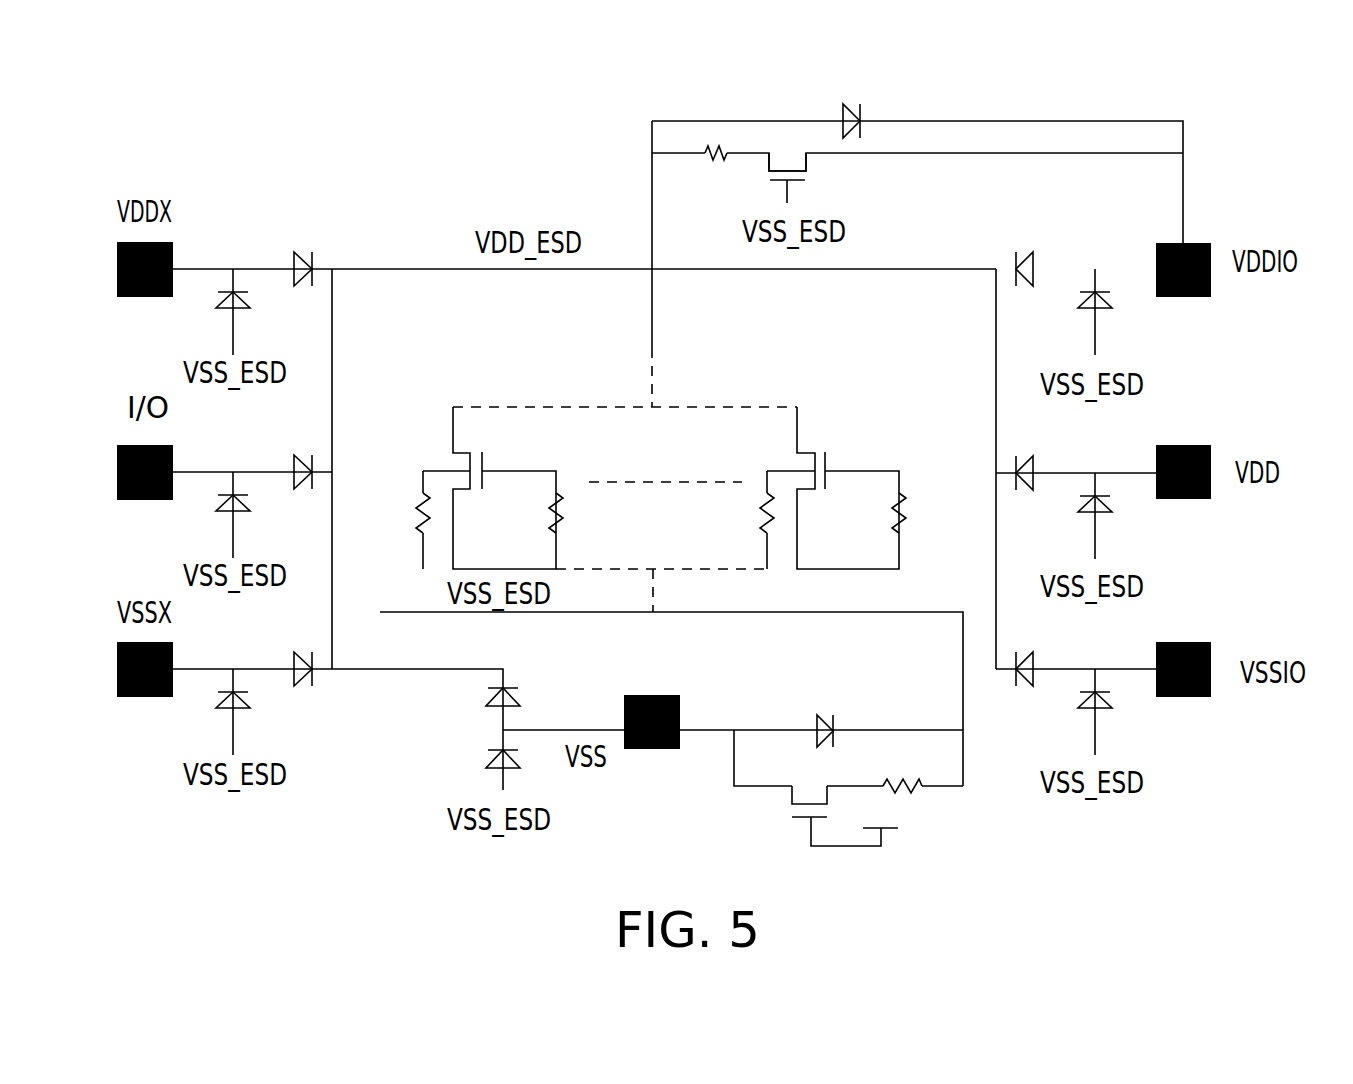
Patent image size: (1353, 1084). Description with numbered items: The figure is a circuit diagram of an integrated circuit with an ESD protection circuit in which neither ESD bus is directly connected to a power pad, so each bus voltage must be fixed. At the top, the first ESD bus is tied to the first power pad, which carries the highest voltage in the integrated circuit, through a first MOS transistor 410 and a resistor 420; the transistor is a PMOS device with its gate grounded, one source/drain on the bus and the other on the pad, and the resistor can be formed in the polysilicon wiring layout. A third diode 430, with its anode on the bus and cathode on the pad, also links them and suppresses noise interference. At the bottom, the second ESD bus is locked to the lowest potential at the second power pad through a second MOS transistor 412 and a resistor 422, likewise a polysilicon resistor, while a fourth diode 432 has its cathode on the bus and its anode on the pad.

The first MOS transistor 410 is at (815, 167).
The resistor 420 is at (722, 167).
The third diode 430 is at (866, 111).
The second MOS transistor 412 is at (785, 811).
The resistor 422 is at (907, 800).
The fourth diode 432 is at (818, 712).